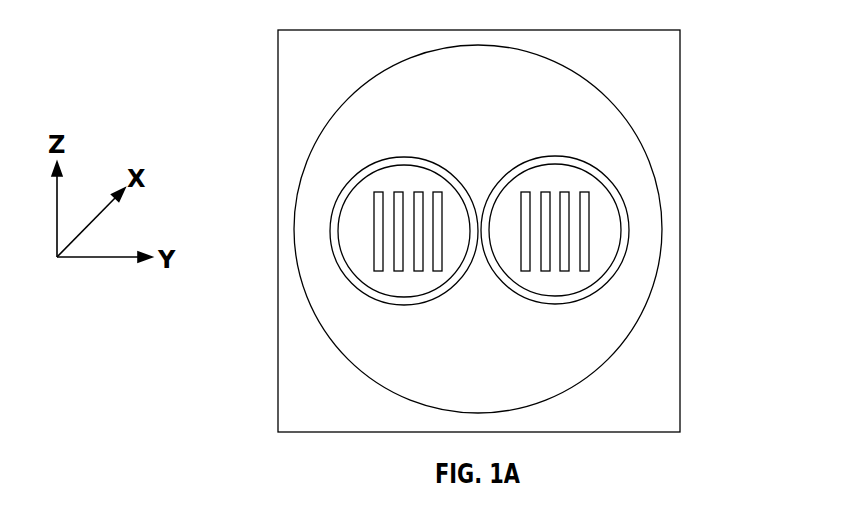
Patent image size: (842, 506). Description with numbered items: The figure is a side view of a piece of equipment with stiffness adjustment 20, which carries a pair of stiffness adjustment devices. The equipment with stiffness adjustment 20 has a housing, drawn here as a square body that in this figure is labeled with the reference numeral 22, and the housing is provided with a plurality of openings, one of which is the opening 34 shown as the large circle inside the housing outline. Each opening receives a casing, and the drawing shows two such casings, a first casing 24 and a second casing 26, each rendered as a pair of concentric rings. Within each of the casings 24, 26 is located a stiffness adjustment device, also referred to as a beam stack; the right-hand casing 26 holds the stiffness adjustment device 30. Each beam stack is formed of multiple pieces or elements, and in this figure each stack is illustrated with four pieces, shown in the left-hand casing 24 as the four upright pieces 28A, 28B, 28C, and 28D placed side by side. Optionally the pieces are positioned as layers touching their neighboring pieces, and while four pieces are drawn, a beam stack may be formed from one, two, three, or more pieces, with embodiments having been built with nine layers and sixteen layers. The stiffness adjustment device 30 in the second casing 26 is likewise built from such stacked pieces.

The equipment with stiffness adjustment 20 is at (484, 224).
The substrate 22 is at (290, 398).
The casing 24 is at (369, 292).
The casing 26 is at (612, 268).
The piece of beam stack 28A is at (378, 208).
The piece of beam stack 28B is at (398, 198).
The piece of beam stack 28C is at (417, 198).
The piece of beam stack 28D is at (438, 201).
The stiffness adjustment device 30 is at (590, 203).
The opening 34 is at (306, 272).